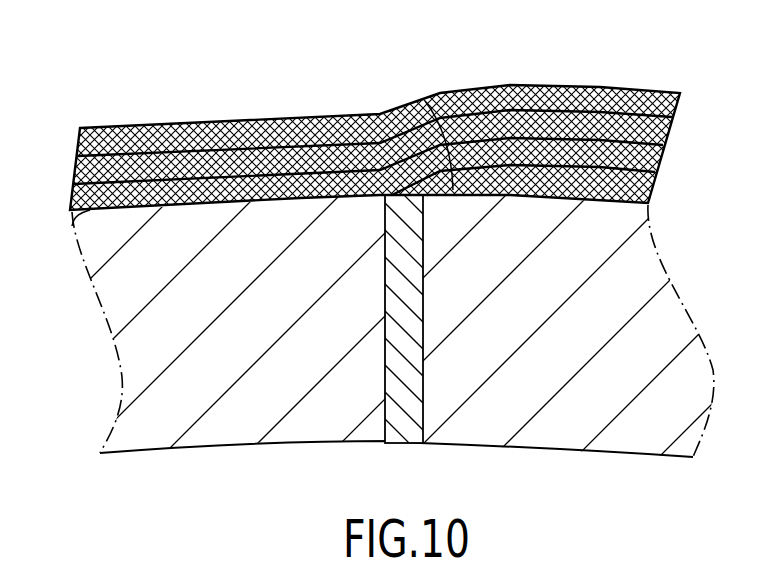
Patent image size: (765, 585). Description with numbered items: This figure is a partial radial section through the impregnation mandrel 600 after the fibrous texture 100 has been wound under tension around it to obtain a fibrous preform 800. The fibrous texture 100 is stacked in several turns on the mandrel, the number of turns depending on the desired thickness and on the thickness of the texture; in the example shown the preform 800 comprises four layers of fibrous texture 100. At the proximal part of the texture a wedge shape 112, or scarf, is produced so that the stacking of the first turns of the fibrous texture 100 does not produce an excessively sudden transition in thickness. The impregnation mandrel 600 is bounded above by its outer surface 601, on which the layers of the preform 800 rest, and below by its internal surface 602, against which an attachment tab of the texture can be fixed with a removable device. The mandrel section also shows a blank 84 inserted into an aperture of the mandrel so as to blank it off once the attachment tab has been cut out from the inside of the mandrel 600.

The fibrous preform 800 is at (393, 120).
The fibrous texture 100 is at (676, 106).
The wedge shape 112 is at (415, 100).
The impregnation mandrel 600 is at (287, 313).
The top surface of substrate 601 is at (72, 229).
The internal surface 602 is at (164, 449).
The blank 84 is at (411, 444).